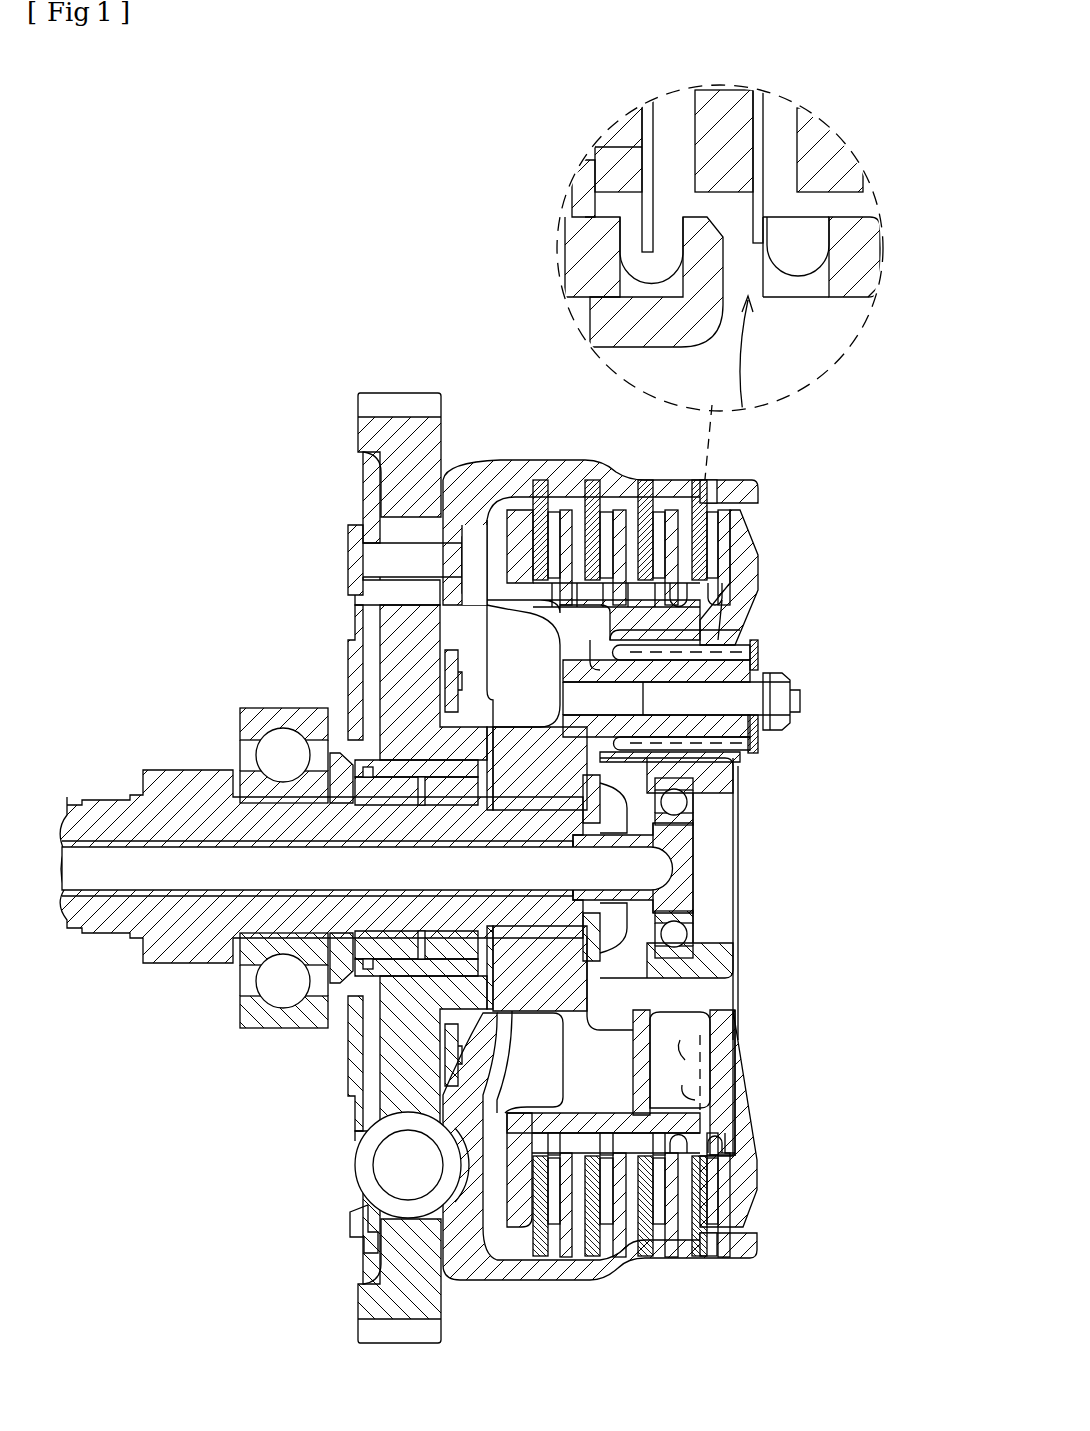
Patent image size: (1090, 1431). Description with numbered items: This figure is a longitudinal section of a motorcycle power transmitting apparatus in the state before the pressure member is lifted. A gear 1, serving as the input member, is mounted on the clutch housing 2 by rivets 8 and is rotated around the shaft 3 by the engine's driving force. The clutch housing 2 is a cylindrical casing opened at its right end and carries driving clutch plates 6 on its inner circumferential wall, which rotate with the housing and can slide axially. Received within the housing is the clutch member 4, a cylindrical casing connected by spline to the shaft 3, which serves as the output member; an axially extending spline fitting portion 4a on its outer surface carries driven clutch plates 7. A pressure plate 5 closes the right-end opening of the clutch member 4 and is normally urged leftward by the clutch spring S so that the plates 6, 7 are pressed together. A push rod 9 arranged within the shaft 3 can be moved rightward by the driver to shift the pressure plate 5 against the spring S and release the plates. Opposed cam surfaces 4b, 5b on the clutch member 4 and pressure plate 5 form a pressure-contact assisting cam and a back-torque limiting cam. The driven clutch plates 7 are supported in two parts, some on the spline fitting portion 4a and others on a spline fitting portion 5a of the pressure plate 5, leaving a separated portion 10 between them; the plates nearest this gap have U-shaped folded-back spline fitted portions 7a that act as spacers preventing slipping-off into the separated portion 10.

The gear 1 is at (378, 437).
The clutch housing 2 is at (529, 466).
The shaft 3 is at (104, 803).
The clutch member 4 is at (515, 600).
The spline fitting portion 4a is at (660, 1143).
The cam surface 4b is at (735, 1050).
The pressure plate 5 is at (750, 568).
The spline fitting portion 5a is at (730, 1142).
The cam surface 5b is at (685, 1097).
The driving clutch plates 6 is at (645, 510).
The driven clutch plates 7 is at (577, 512).
The spline fitted portions 7a is at (728, 598).
The rivets 8 is at (355, 545).
The push rod 9 is at (120, 880).
The separated portion 10 is at (730, 628).
The clutch spring S is at (748, 760).